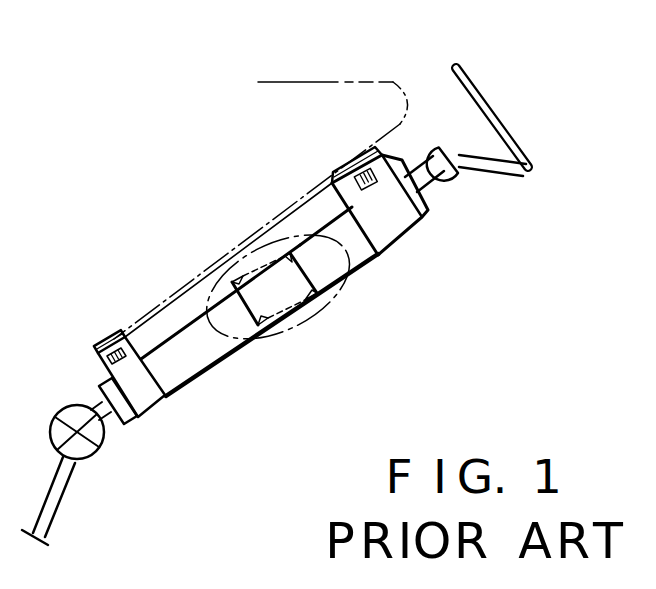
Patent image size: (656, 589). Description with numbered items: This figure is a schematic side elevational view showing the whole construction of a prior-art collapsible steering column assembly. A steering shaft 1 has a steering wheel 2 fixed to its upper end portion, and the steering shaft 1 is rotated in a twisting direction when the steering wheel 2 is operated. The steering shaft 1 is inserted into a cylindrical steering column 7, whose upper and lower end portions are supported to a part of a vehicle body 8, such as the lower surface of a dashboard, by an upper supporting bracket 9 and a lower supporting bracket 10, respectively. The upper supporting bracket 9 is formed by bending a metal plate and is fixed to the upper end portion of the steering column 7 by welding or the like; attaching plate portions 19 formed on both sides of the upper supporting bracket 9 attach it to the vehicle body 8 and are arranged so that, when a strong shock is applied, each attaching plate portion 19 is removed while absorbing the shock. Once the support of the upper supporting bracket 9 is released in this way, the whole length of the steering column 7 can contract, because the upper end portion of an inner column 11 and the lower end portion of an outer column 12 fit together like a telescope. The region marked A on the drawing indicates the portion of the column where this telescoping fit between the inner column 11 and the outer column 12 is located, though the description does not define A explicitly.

The steering shaft 1 is at (437, 183).
The steering wheel 2 is at (505, 120).
The steering column 7 is at (368, 260).
The vehicle body 8 is at (328, 82).
The upper supporting bracket 9 is at (407, 240).
The lower supporting bracket 10 is at (193, 378).
The inner column 11 is at (220, 338).
The outer column 12 is at (353, 265).
The attaching plate portion 19 is at (366, 150).
The energy absorbing coupling portion A is at (317, 332).